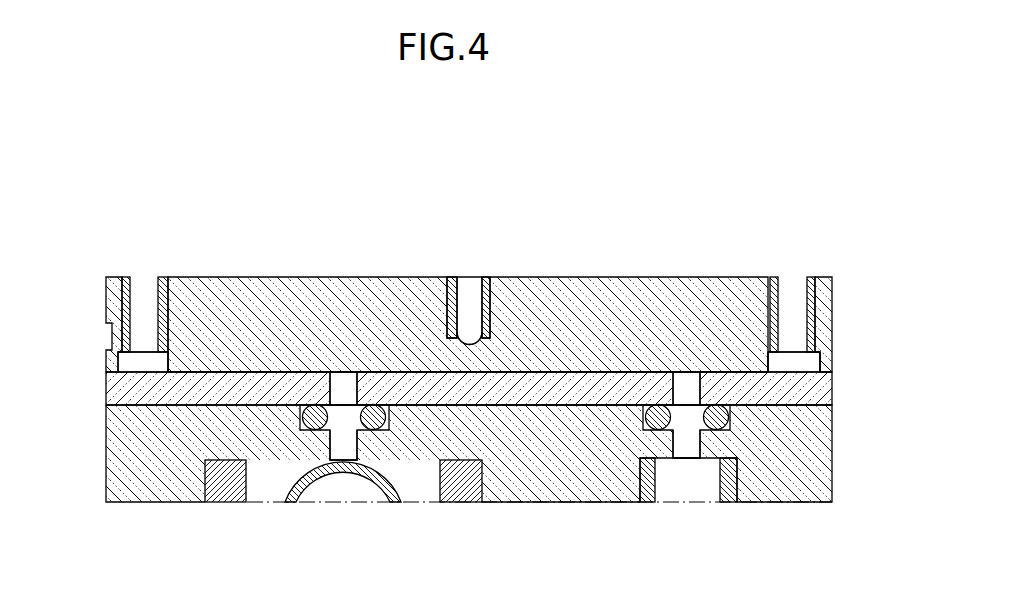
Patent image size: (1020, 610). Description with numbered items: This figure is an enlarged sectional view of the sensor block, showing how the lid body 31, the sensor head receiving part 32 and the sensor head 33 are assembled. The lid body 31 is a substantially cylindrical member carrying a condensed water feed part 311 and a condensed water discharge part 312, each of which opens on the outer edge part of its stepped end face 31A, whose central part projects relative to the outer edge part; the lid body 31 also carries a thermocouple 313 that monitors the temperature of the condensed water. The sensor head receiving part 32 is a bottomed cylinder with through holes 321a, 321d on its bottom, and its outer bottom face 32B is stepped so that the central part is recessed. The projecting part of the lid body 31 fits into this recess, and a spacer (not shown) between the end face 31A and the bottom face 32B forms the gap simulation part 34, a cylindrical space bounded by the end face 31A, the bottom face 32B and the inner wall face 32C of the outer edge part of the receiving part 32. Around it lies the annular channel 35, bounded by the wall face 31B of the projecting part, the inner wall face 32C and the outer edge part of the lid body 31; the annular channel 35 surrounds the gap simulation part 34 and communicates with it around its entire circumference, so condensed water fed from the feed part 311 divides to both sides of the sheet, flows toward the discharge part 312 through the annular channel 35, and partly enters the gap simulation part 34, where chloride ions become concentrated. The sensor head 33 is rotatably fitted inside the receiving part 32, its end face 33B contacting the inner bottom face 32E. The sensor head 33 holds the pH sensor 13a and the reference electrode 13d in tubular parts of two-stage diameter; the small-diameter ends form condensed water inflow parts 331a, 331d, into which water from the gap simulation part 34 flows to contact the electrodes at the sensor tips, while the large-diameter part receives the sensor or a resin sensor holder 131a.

The lid body 31 is at (542, 327).
The condensed water feed part 311 is at (768, 316).
The condensed water discharge part 312 is at (168, 308).
The thermocouple 313 is at (493, 312).
The end face 31A is at (600, 371).
The wall face 31B is at (172, 358).
The sensor head receiving part 32 is at (398, 372).
The outer bottom face 32B is at (782, 405).
The inner wall face 32C is at (820, 367).
The inner bottom face 32E is at (537, 405).
The through hole 321a is at (335, 389).
The through hole 321d is at (688, 424).
The sensor head 33 is at (117, 480).
The end face 33B is at (499, 403).
The condensed water inflow part 331a is at (338, 435).
The condensed water inflow part 331d is at (700, 440).
The gap simulation part 34 is at (290, 373).
The annular channel 35 is at (118, 362).
The sensor holder 131a is at (207, 480).
The pH sensor 13a is at (341, 485).
The reference electrode 13d is at (684, 487).